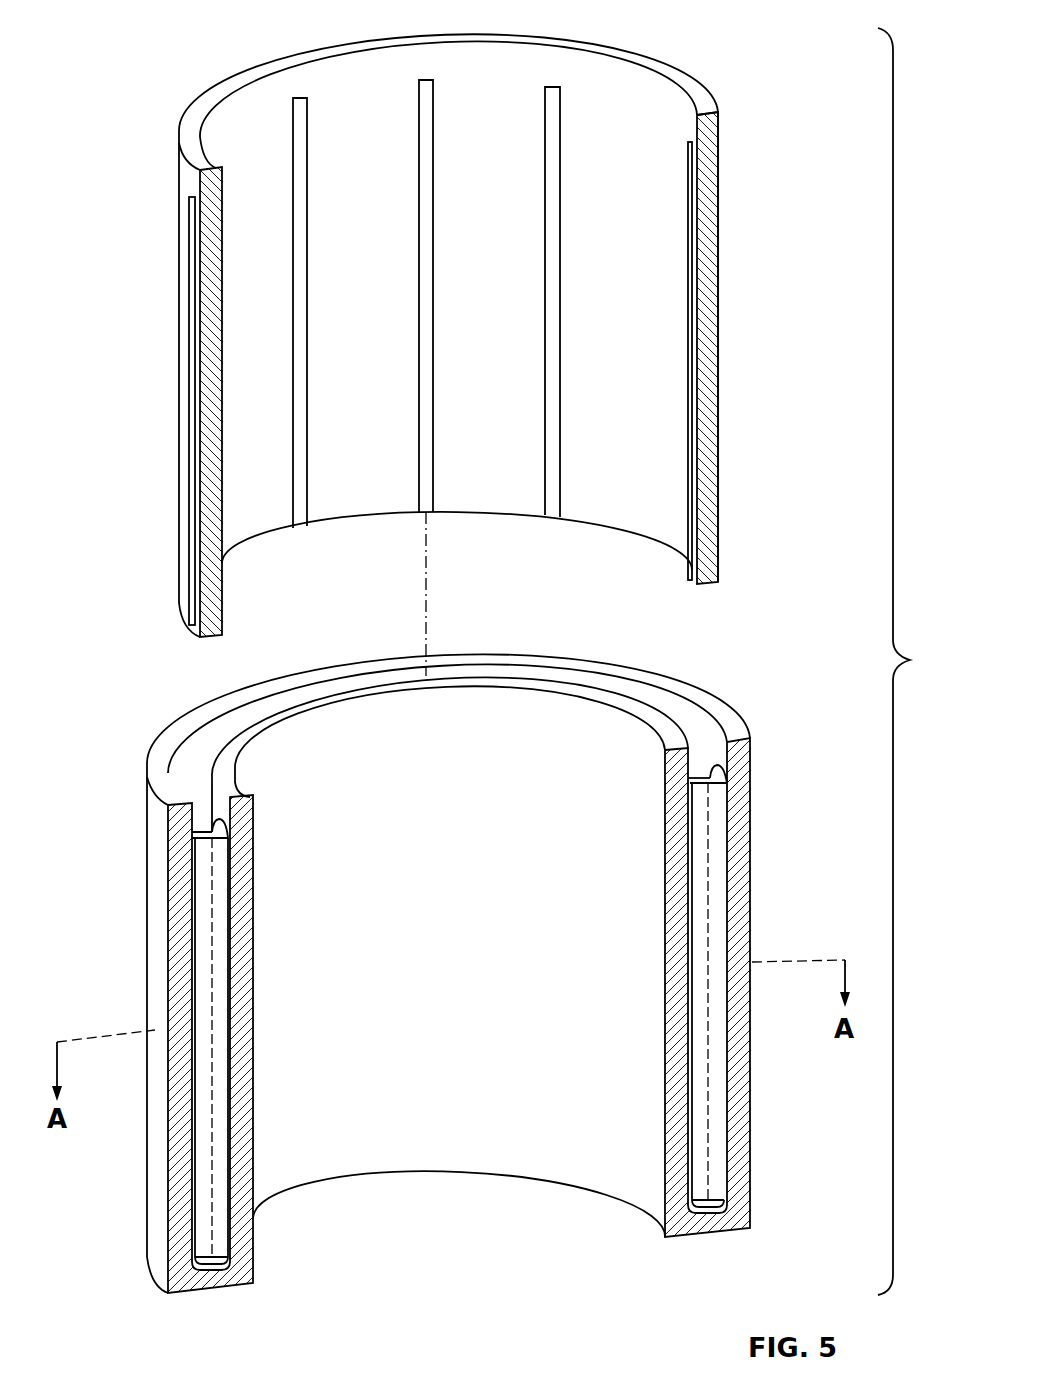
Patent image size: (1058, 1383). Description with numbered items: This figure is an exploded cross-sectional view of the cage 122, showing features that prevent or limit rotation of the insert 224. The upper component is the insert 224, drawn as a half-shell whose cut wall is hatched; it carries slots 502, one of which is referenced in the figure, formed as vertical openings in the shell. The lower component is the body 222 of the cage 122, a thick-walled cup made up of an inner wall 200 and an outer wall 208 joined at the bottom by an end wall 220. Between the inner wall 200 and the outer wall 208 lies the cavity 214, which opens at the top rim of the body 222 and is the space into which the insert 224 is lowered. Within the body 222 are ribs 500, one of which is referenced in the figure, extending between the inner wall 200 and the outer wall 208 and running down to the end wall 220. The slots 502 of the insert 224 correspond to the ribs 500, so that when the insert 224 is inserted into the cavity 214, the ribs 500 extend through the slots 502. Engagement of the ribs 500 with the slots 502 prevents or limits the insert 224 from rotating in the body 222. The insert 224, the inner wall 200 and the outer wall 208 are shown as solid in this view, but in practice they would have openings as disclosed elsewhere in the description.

The cage 122 is at (387, 340).
The slot 502 is at (286, 345).
The insert 224 is at (198, 398).
The cavity 214 is at (196, 782).
The rib 500 is at (205, 940).
The inner wall 200 is at (393, 1002).
The outer wall 208 is at (178, 1052).
The body 222 is at (178, 1145).
The end wall 220 is at (212, 1280).